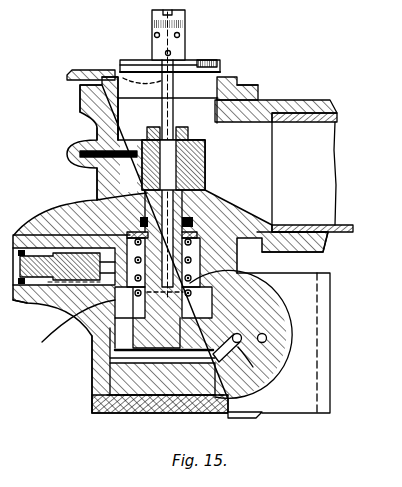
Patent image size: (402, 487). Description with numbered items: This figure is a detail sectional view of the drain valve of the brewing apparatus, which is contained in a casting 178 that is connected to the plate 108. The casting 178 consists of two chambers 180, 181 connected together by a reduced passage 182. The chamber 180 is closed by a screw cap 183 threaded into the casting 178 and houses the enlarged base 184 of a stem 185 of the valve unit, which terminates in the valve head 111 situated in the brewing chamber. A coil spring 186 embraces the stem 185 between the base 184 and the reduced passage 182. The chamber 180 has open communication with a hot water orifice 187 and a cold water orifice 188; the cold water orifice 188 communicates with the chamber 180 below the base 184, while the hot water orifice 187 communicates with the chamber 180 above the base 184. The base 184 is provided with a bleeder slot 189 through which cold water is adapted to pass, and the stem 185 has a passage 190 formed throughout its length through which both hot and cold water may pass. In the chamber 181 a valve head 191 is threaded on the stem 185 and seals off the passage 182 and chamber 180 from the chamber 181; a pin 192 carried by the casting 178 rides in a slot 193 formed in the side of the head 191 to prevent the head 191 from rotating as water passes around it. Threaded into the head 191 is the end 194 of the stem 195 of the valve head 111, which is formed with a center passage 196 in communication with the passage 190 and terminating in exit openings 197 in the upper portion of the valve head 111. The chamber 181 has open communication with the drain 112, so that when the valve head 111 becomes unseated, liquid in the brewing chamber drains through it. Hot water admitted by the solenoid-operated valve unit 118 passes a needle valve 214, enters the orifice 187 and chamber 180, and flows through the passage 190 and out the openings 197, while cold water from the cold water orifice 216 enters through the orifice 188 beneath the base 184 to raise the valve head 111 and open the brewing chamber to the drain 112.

The exit openings 197 is at (181, 35).
The valve head 111 is at (206, 60).
The center passage 196 is at (121, 70).
The stem 195 is at (205, 93).
The plate 108 is at (225, 105).
The end of stem 194 is at (189, 134).
The chamber 181 is at (125, 117).
The pin 192 is at (67, 149).
The slot 193 is at (100, 177).
The reduced passage 182 is at (100, 205).
The hot water orifice 187 is at (65, 235).
The valve head 191 is at (205, 163).
The stem 185 is at (183, 206).
The passage 190 is at (183, 230).
The coil spring 186 is at (190, 262).
The drain 112 is at (337, 178).
The enlarged base 184 is at (286, 302).
The cold water orifice 216 is at (268, 340).
The cold water orifice 188 is at (270, 376).
The solenoid-operated valve unit 118 is at (298, 421).
The screw cap 183 is at (115, 409).
The bleeder slot 189 is at (115, 350).
The casting 178 is at (90, 352).
The chamber 180 is at (86, 329).
The needle valve 214 is at (47, 302).